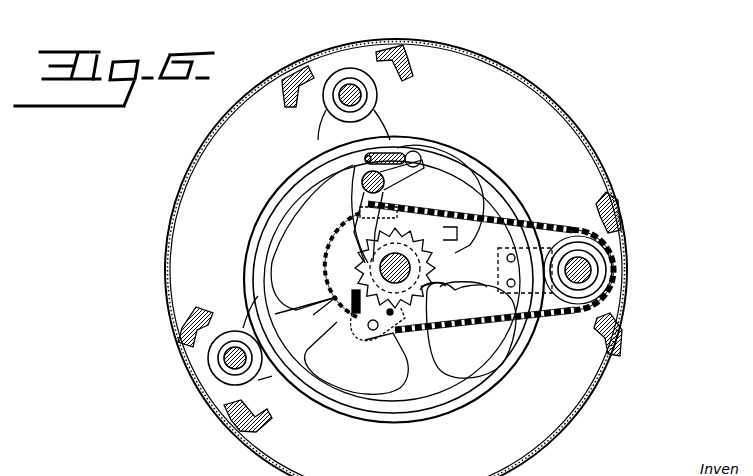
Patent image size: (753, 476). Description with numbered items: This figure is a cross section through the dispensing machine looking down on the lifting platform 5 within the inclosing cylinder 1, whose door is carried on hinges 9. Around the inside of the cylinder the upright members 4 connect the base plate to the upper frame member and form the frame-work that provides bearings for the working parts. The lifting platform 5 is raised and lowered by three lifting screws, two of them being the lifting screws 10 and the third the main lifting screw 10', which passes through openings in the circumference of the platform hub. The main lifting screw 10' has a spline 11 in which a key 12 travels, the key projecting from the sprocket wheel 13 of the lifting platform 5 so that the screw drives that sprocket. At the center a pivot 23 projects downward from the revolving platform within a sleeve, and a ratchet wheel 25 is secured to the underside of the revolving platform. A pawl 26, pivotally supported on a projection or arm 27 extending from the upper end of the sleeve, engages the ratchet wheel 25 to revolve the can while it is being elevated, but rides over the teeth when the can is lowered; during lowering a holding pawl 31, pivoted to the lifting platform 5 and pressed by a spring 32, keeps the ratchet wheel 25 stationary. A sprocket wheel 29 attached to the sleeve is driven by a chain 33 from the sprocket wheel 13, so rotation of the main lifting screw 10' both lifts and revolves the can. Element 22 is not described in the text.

The inclosing cylinder 1 is at (491, 58).
The upright members 4 is at (303, 63).
The lifting platform 5 is at (272, 194).
The hinges 9 is at (420, 223).
The lifting screws 10 is at (263, 245).
The main lifting screw 10' is at (621, 244).
The spline 11 is at (615, 248).
The key 12 is at (560, 306).
The sprocket wheel 13 is at (567, 228).
The inner ring 22 is at (497, 163).
The pivot 23 is at (418, 263).
The ratchet wheel 25 is at (355, 263).
The pawl 26 is at (378, 338).
The projection or arm 27 is at (313, 318).
The sprocket wheel 29 is at (456, 236).
The holding pawl 31 is at (368, 200).
The spring 32 is at (385, 150).
The chain 33 is at (486, 323).